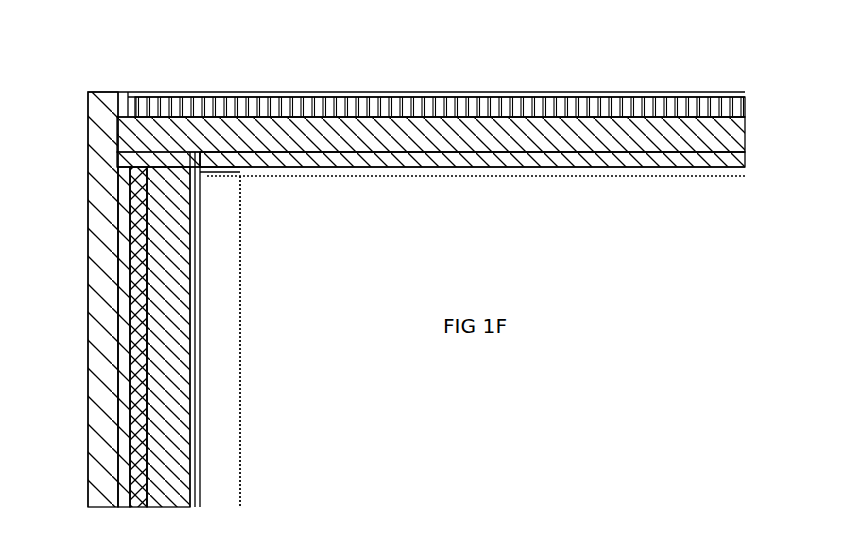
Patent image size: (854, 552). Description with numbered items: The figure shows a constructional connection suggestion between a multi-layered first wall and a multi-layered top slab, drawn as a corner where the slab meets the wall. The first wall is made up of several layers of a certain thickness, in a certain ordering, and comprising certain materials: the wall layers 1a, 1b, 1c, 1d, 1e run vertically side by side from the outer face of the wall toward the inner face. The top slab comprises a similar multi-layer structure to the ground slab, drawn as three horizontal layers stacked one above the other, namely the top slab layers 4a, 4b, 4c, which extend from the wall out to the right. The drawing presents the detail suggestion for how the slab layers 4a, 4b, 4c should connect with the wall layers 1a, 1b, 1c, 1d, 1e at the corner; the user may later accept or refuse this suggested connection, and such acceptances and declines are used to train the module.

The first wall layer 1a is at (107, 138).
The first wall layer 1b is at (110, 188).
The first wall layer 1c is at (103, 223).
The first wall layer 1d is at (207, 325).
The first wall layer 1e is at (200, 284).
The top slab layer 4a is at (403, 112).
The top slab layer 4b is at (455, 95).
The top slab layer 4c is at (503, 93).